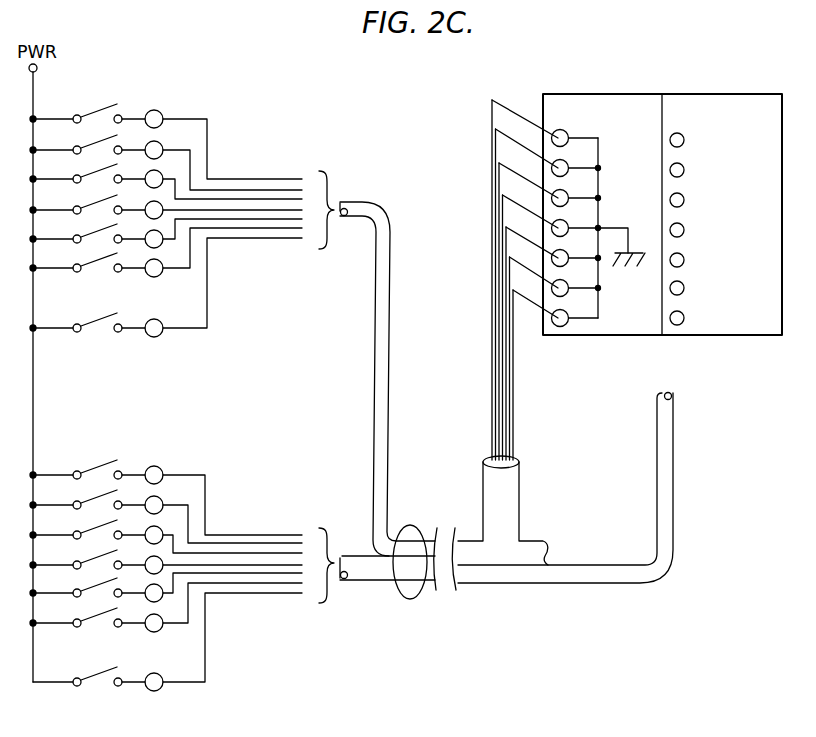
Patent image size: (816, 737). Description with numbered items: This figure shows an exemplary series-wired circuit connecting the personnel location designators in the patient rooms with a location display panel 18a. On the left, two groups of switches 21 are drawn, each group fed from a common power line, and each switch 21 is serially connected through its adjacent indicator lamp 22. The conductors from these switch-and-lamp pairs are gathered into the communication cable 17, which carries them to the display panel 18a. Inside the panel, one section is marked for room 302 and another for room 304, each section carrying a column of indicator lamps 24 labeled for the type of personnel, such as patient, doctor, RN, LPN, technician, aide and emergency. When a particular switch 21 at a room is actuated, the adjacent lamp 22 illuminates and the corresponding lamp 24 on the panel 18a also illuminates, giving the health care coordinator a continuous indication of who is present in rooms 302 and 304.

The communication cable 17 is at (410, 599).
The location display panel 18a is at (641, 319).
The switches 21 is at (94, 96).
The indicator lamps 22 is at (172, 103).
The indicator lamps 24 is at (679, 132).
The room 302 is at (620, 124).
The room 304 is at (741, 125).